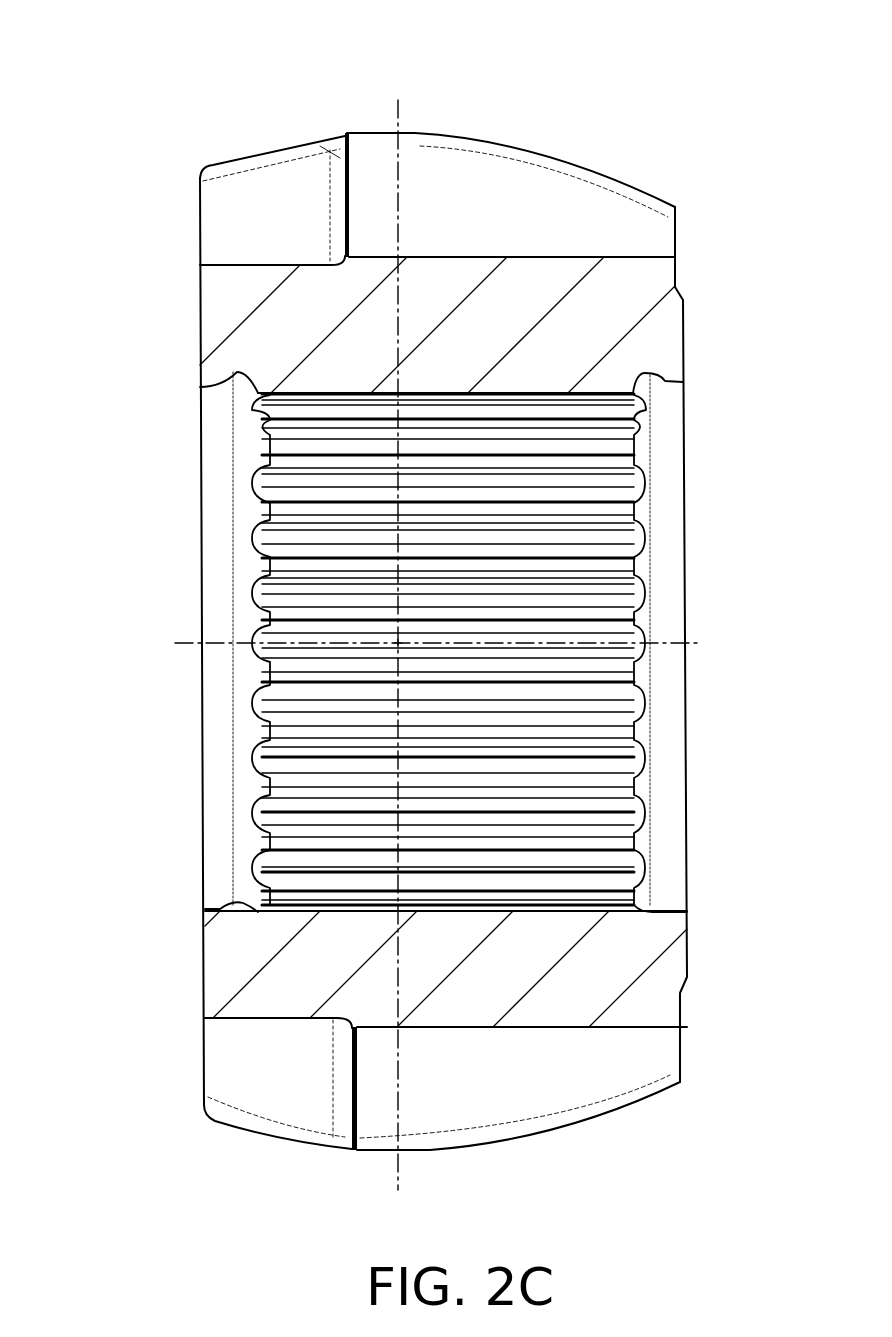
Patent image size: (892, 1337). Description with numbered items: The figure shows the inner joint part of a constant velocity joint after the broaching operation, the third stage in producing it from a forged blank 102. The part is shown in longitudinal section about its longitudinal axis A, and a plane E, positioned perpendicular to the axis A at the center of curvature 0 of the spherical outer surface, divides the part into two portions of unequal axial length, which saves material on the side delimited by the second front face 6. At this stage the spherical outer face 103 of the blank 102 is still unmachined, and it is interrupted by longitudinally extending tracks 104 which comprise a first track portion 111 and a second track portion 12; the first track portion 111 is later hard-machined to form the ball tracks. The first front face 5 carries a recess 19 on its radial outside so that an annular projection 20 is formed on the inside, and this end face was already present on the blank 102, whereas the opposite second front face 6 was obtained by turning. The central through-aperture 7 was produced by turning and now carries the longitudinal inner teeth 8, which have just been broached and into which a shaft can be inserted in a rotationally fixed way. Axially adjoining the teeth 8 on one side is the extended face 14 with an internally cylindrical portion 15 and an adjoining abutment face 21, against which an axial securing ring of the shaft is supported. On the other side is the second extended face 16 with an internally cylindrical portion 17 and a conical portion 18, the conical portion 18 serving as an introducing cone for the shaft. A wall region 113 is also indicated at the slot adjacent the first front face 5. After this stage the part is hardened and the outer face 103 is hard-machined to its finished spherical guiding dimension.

The blank 102 is at (409, 578).
The slot wall 113 is at (350, 176).
The plane E is at (398, 167).
The outer face 103 is at (472, 133).
The tracks 104 is at (520, 190).
The first track portion 111 is at (630, 257).
The recess 19 is at (677, 265).
The second track portion 12 is at (245, 265).
The second front face 6 is at (200, 318).
The first front face 5 is at (685, 330).
The second extended face 16 is at (215, 382).
The extended face 14 is at (645, 374).
The central through-aperture 7 is at (583, 397).
The inner teeth 8 is at (607, 535).
The longitudinal axis A is at (697, 644).
The center of curvature 0 is at (396, 652).
The conical portion 18 is at (255, 812).
The abutment face 21 is at (640, 853).
The internally cylindrical portion 15 is at (665, 913).
The internally cylindrical portion 17 is at (218, 907).
The annular projection 20 is at (688, 945).